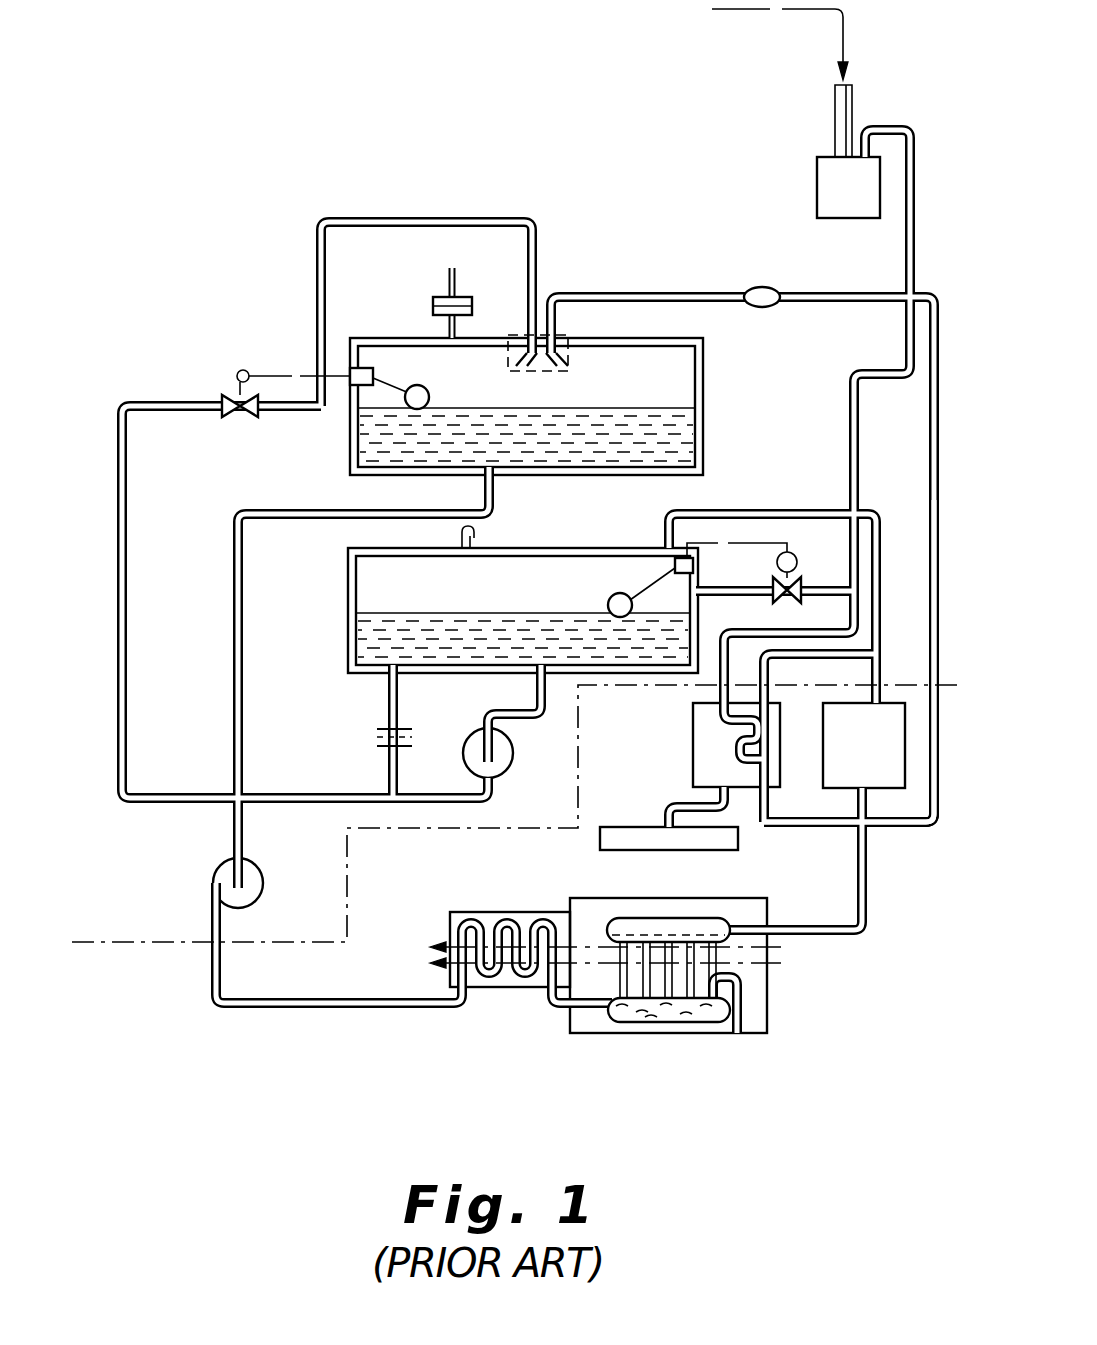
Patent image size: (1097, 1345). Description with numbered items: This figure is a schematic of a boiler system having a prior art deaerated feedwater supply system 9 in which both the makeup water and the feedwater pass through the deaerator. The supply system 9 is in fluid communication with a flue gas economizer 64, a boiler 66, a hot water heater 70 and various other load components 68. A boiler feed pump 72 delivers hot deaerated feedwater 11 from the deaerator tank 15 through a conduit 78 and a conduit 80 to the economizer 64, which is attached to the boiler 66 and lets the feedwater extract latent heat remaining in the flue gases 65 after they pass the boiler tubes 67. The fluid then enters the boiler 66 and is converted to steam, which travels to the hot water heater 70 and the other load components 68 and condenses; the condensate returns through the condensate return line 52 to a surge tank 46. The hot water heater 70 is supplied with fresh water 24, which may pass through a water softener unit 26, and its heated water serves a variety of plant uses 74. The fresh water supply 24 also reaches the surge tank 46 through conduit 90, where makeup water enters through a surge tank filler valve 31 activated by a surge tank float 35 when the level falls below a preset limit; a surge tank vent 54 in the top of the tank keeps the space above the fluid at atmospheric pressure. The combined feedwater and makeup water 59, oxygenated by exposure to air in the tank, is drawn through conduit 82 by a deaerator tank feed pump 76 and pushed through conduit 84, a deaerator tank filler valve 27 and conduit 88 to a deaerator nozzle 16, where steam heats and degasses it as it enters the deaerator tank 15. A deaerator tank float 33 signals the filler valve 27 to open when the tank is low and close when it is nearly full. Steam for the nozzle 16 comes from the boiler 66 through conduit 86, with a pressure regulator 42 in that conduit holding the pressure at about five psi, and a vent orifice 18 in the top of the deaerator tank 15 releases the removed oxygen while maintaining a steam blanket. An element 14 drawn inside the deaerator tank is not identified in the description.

The deaerated feedwater supply system 9 is at (176, 818).
The hot deaerated feedwater 11 is at (678, 444).
The fuel reservoir 14 is at (401, 370).
The deaerator tank 15 is at (705, 386).
The deaerator nozzle 16 is at (574, 342).
The vent orifice 18 is at (472, 300).
The fresh water supply 24 is at (770, 27).
The water softener unit 26 is at (825, 192).
The deaerator tank filler valve 27 is at (216, 374).
The surge tank filler valve 31 is at (815, 580).
The deaerator tank float 33 is at (350, 386).
The surge tank float 35 is at (695, 563).
The pressure regulator 42 is at (762, 287).
The surge tank 46 is at (348, 590).
The condensate return line 52 is at (795, 511).
The surge tank vent 54 is at (476, 536).
The combined feedwater and makeup water 59 is at (372, 643).
The flue gas economizer 64 is at (502, 990).
The flue gases 65 is at (774, 965).
The boiler 66 is at (625, 1035).
The boiler tubes 67 is at (737, 1028).
The other load components 68 is at (878, 760).
The hot water heater 70 is at (693, 750).
The boiler feed pump 72 is at (258, 880).
The plant uses 74 is at (640, 827).
The deaerator tank feed pump 76 is at (470, 748).
The conduit 78 is at (265, 508).
The conduit 80 is at (270, 1004).
The conduit 82 is at (548, 690).
The conduit 84 is at (135, 552).
The conduit 86 is at (930, 470).
The conduit 88 is at (350, 222).
The conduit 90 is at (906, 266).